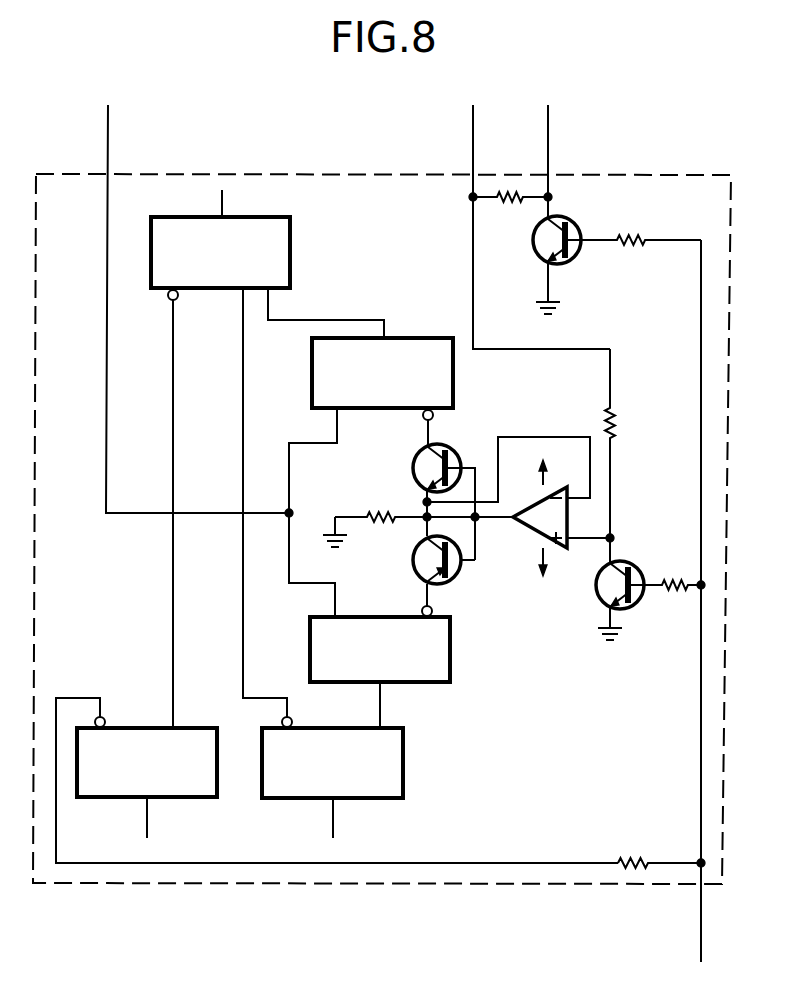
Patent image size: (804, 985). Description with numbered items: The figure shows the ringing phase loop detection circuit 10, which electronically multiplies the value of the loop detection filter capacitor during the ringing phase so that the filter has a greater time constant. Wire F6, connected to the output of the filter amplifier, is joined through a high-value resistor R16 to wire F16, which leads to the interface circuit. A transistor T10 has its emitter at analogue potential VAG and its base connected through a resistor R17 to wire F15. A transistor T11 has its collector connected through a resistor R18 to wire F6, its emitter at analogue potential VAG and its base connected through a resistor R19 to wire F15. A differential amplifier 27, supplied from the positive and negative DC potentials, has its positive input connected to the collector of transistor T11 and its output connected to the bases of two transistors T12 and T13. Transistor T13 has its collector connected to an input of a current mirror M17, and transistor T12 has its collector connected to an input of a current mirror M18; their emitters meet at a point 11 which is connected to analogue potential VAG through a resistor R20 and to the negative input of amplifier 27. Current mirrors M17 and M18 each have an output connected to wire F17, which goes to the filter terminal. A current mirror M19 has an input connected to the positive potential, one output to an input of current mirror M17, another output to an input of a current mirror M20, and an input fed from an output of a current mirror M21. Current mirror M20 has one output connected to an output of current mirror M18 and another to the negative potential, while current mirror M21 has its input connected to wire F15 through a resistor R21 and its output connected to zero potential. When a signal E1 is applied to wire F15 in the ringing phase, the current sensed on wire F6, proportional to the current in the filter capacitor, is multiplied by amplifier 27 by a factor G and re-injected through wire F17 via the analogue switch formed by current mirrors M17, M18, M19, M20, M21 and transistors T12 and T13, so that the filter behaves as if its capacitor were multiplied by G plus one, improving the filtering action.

The ringing phase loop detection circuit 10 is at (329, 191).
The point common to the emitters of transistors T12 and T13 11 is at (423, 521).
The differential amplifier 27 is at (540, 518).
The wire F6 is at (473, 132).
The wire F15 is at (699, 914).
The wire F16 is at (550, 140).
The wire F17 is at (108, 136).
The signal E1 is at (709, 604).
The current mirror M17 is at (440, 393).
The current mirror M18 is at (432, 667).
The current mirror M19 is at (272, 260).
The current mirror M20 is at (332, 750).
The current mirror M21 is at (139, 748).
The high-value resistor R16 is at (512, 206).
The resistor R17 is at (628, 247).
The resistor R18 is at (618, 418).
The resistor R19 is at (689, 597).
The resistor R20 is at (407, 511).
The resistor R21 is at (638, 854).
The transistor T10 is at (582, 223).
The transistor T11 is at (598, 598).
The transistor T12 is at (447, 585).
The transistor T13 is at (440, 443).